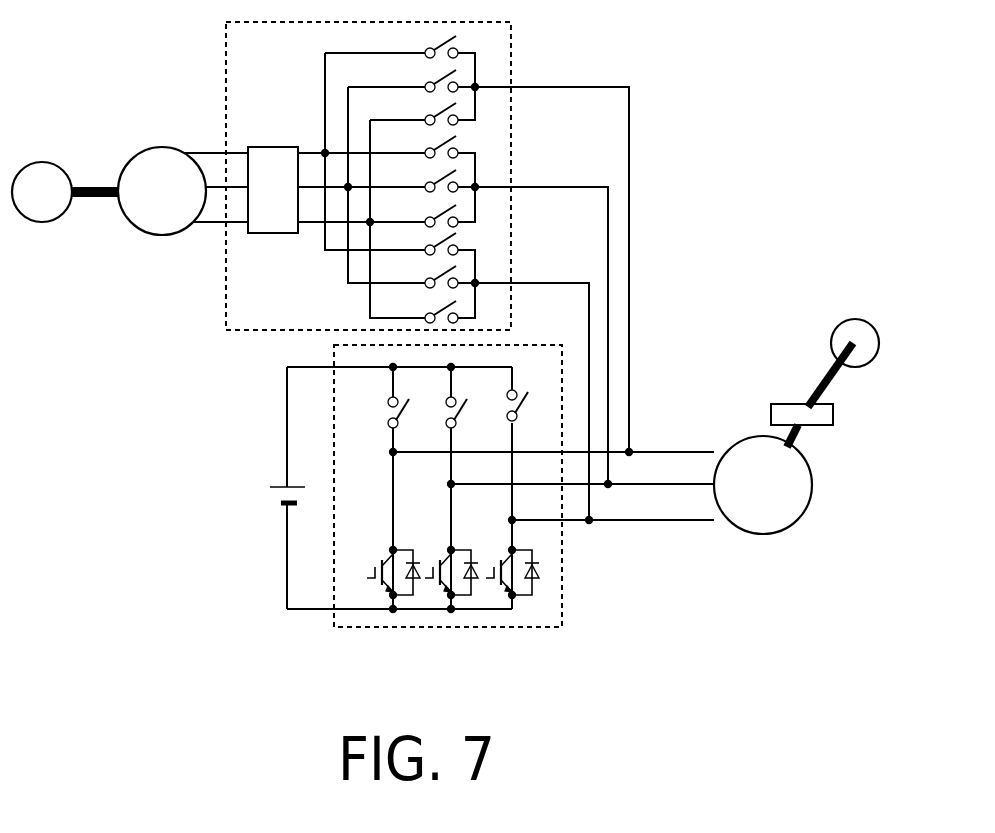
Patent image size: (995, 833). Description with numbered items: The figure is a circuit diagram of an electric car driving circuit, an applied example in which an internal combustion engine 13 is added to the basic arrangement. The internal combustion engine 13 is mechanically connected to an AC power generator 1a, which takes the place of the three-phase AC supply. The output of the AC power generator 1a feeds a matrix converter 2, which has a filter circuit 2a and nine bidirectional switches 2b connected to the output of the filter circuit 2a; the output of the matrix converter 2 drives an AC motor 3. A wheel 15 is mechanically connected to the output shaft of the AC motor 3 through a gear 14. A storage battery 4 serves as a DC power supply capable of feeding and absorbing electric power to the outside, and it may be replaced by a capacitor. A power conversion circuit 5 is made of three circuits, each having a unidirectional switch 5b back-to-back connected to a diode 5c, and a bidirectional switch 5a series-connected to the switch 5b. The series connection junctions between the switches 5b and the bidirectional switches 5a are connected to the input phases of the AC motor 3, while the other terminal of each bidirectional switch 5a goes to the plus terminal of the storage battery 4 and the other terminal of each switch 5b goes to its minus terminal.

The internal combustion engine 13 is at (65, 192).
The AC power generator 1a is at (162, 191).
The filter circuit 2a is at (273, 190).
The matrix converter 2 is at (406, 271).
The bidirectional switches 2b is at (428, 177).
The AC motor 3 is at (602, 485).
The gear 14 is at (820, 425).
The wheel 15 is at (856, 363).
The storage battery 4 is at (278, 488).
The power conversion circuit 5 is at (424, 486).
The bidirectional switches 5a is at (442, 409).
The unidirectional switches 5b is at (438, 571).
The diodes 5c is at (466, 562).